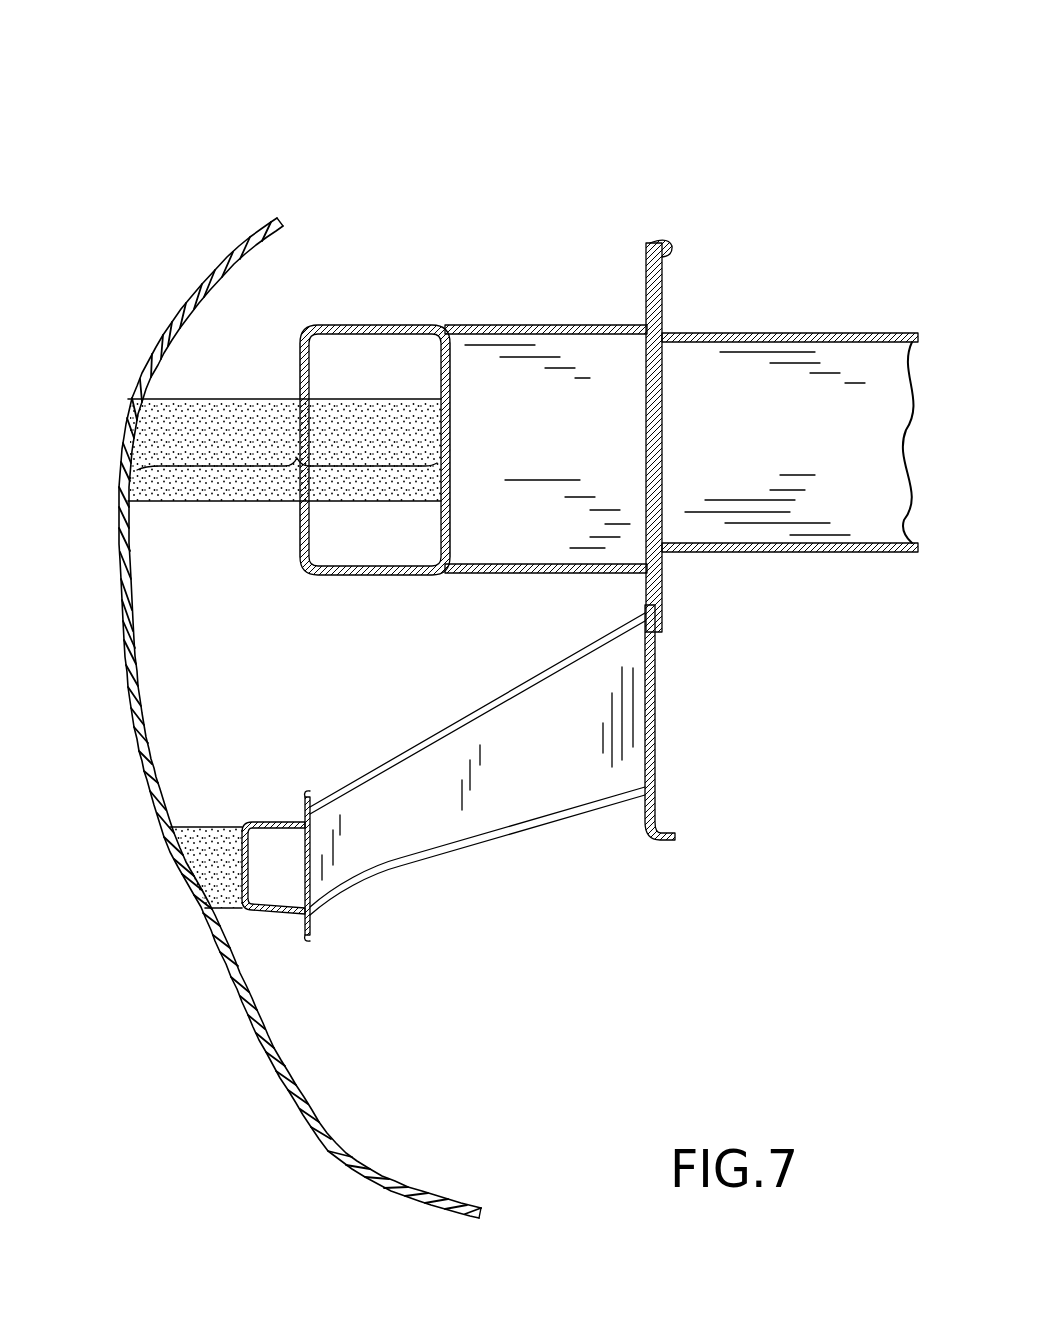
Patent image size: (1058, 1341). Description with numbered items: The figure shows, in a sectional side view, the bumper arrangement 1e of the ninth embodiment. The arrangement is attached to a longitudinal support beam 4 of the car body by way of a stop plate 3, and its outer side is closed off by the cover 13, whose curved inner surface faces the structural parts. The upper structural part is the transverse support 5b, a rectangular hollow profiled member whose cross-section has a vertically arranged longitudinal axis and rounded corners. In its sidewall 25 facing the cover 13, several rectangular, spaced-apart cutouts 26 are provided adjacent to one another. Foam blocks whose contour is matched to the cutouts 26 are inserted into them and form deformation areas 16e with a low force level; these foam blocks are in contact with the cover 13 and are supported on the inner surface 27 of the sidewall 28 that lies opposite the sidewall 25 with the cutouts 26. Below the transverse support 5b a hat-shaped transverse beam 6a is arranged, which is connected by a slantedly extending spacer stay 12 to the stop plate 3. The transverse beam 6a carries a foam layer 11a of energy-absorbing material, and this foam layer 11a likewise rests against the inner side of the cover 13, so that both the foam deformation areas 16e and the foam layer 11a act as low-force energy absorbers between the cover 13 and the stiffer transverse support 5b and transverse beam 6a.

The bumper arrangement 1e is at (268, 134).
The cover 13 is at (123, 670).
The longitudinal support beam 4 is at (817, 335).
The stop plate 3 is at (667, 450).
The transverse support 5b is at (375, 510).
The sidewall 25 is at (300, 372).
The cutouts 26 is at (313, 494).
The inner surface 27 is at (447, 511).
The sidewall 28 is at (453, 377).
The deformation areas 16e is at (284, 450).
The spacer stay 12 is at (503, 798).
The transverse beam 6a is at (290, 923).
The foam layer 11a is at (205, 852).